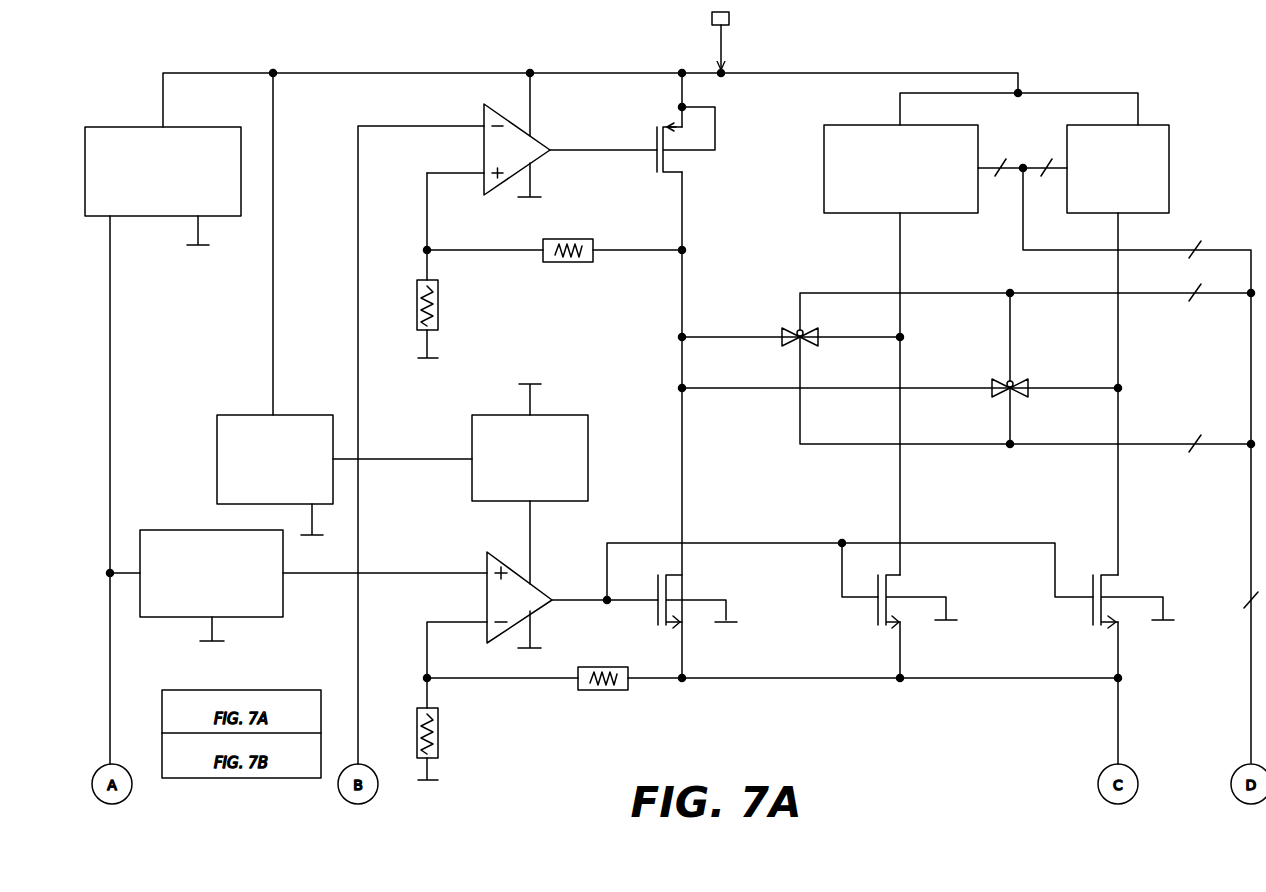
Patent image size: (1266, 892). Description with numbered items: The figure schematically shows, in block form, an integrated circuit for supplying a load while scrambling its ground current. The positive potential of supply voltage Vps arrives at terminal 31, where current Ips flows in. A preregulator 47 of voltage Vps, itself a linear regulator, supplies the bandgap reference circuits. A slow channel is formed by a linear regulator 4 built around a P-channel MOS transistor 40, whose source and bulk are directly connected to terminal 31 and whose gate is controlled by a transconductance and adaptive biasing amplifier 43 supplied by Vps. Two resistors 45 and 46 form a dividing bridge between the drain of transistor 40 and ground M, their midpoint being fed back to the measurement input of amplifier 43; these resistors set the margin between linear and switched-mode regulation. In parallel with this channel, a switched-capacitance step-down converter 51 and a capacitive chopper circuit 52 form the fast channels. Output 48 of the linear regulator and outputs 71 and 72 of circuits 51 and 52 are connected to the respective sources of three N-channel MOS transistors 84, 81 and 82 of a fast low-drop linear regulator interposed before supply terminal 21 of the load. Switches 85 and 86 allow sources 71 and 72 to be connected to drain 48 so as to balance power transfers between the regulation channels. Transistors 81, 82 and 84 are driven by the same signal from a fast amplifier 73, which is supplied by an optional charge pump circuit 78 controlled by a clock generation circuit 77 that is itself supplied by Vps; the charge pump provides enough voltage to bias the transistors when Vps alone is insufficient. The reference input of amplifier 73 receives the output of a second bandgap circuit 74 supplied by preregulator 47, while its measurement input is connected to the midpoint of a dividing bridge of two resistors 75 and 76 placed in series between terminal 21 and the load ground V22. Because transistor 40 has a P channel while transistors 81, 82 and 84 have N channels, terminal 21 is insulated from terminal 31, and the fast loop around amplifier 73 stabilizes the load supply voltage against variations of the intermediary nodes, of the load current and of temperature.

The terminal 31 is at (730, 18).
The preregulator 47 is at (108, 127).
The transconductance and adaptive biasing amplifier 43 is at (540, 138).
The P-channel MOS transistor 40 is at (672, 176).
The output 48 is at (684, 496).
The resistor 45 is at (583, 264).
The linear regulator 4 is at (505, 258).
The resistor 46 is at (440, 306).
The step-down converter circuit 51 is at (830, 123).
The chopper circuit 52 is at (1160, 123).
The switch 85 is at (792, 330).
The switch 86 is at (1000, 378).
The output 71 is at (902, 496).
The output 72 is at (1120, 496).
The clock generation circuit 77 is at (242, 415).
The charge pump circuit 78 is at (582, 415).
The second reference voltage generation circuit 74 is at (205, 530).
The fast amplifier 73 is at (542, 582).
The N-channel MOS transistor 84 is at (676, 623).
The N-channel MOS transistor 81 is at (893, 623).
The N-channel MOS transistor 82 is at (1108, 623).
The resistor 75 is at (600, 690).
The resistor 76 is at (440, 736).
The supply terminal 21 is at (1118, 726).